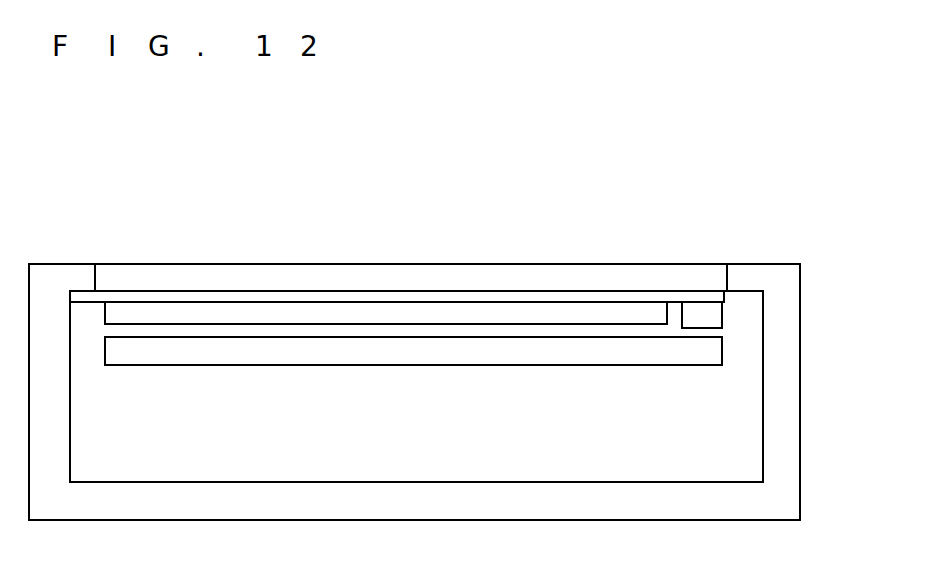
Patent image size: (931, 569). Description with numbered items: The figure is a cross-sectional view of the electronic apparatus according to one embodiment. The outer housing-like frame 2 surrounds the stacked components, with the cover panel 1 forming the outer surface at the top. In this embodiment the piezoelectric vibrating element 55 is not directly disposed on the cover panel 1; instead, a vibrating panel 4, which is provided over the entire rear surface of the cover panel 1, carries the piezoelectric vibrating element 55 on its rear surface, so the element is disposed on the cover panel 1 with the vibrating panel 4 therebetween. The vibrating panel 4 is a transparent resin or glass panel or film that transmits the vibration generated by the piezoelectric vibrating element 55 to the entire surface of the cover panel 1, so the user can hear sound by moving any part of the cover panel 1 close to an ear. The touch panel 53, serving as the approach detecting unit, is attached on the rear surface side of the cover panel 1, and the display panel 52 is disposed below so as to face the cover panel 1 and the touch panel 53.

The cover panel 1 is at (422, 283).
The housing 2 is at (48, 278).
The vibrating panel 4 is at (617, 300).
The display panel 52 is at (212, 350).
The touch panel 53 is at (535, 315).
The piezoelectric vibrating element 55 is at (700, 312).